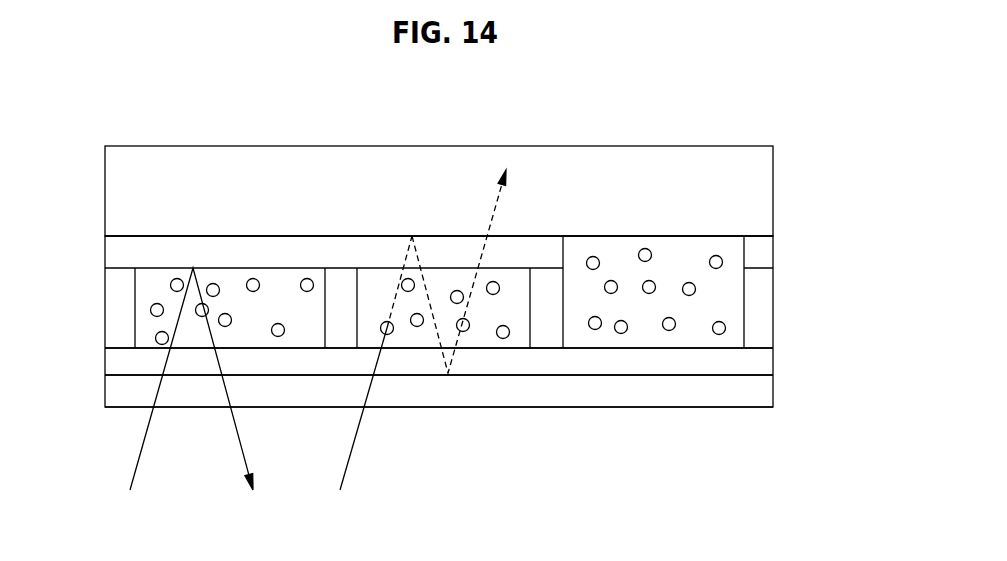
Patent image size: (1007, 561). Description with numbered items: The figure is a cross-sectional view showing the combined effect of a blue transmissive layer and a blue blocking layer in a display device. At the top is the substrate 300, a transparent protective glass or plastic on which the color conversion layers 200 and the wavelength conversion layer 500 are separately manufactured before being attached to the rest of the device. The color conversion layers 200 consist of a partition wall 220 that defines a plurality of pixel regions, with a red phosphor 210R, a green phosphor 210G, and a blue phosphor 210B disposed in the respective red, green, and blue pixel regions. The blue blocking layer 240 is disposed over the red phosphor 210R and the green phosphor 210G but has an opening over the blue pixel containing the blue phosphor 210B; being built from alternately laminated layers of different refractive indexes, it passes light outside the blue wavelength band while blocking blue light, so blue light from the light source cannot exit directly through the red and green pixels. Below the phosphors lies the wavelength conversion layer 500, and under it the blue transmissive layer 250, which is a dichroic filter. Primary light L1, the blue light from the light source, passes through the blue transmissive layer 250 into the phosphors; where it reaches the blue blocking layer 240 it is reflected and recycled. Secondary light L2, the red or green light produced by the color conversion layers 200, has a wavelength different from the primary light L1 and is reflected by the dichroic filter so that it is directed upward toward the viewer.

The substrate 300 is at (136, 192).
The color conversion layers 200 is at (86, 307).
The blue blocking layer 240 is at (348, 253).
The partition wall 220 is at (762, 302).
The red phosphor 210R is at (252, 279).
The green phosphor 210G is at (458, 291).
The blue phosphor 210B is at (669, 331).
The wavelength conversion layer 500 is at (760, 362).
The blue transmissive layer 250 is at (760, 392).
The primary light L1 is at (138, 458).
The secondary light L2 is at (497, 207).